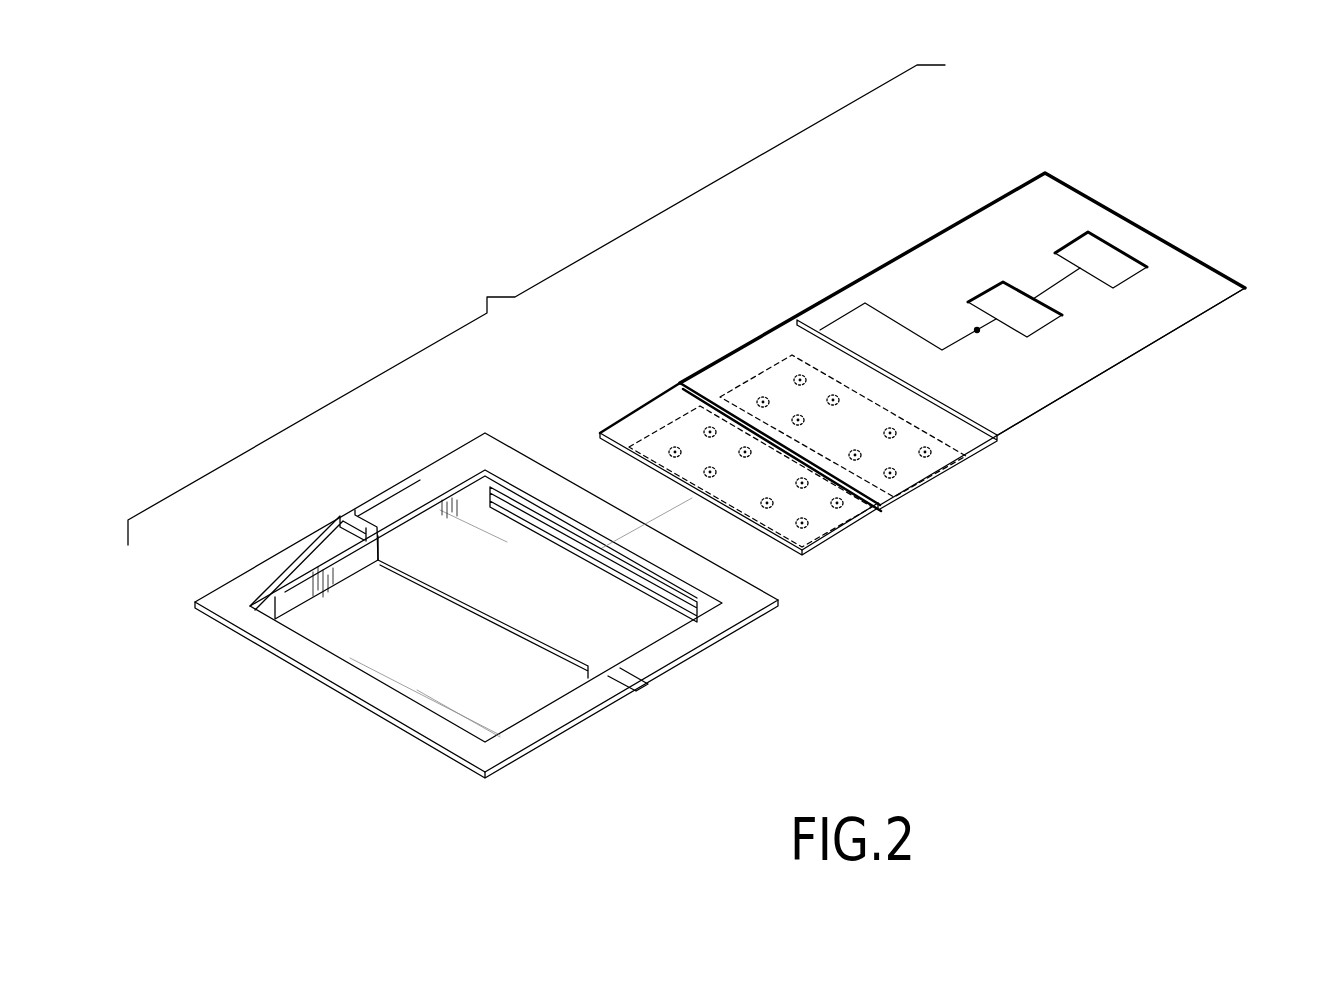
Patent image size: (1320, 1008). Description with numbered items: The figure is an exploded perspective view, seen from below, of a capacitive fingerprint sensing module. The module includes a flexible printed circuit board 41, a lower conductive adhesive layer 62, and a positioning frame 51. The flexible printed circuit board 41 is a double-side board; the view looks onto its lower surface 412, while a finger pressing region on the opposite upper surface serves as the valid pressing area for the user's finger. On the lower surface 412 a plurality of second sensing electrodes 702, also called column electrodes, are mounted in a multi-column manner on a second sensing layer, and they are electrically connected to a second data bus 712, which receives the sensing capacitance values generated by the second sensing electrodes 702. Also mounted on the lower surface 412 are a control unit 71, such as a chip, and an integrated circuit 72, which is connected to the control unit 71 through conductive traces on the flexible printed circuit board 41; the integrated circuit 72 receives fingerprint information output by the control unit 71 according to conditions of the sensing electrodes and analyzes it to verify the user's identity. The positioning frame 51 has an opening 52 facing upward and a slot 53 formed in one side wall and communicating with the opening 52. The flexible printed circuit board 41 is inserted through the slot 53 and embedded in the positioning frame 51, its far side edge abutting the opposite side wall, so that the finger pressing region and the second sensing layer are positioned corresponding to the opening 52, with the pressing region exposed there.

The flexible printed circuit board 41 is at (1185, 224).
The lower surface 412 is at (1150, 315).
The positioning frame 51 is at (575, 707).
The opening 52 is at (398, 545).
The slot 53 is at (542, 525).
The lower conductive adhesive layer 62 is at (958, 437).
The control unit 71 is at (1000, 305).
The integrated circuit 72 is at (1085, 250).
The second sensing electrodes 702 is at (839, 513).
The second data bus 712 is at (733, 372).